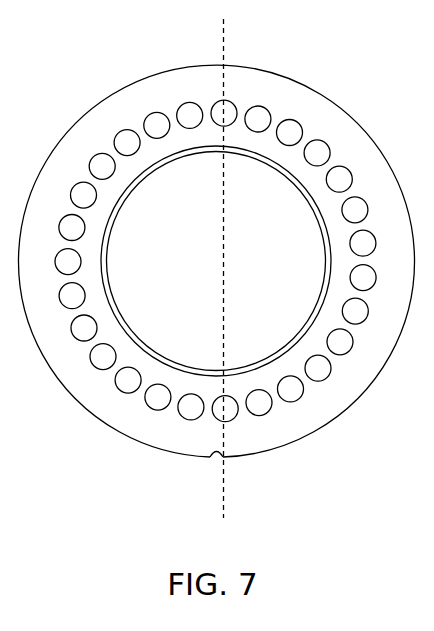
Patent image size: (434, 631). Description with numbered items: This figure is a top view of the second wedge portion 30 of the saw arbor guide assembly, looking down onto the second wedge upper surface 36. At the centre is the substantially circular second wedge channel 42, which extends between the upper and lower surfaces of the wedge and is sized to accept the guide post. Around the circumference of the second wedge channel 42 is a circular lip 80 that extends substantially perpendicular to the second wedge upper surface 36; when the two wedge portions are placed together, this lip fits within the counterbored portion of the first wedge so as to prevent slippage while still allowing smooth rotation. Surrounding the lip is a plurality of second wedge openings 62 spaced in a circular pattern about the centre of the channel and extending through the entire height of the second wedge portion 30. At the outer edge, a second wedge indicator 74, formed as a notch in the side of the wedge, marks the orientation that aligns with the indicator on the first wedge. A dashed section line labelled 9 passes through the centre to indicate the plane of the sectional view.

The second wedge portion 30 is at (359, 103).
The second wedge upper surface 36 is at (147, 98).
The second wedge channel 42 is at (178, 274).
The second wedge openings 62 is at (127, 143).
The second wedge indicator 74 is at (215, 458).
The circular lip 80 is at (250, 157).
The section line 9- 9 is at (222, 19).